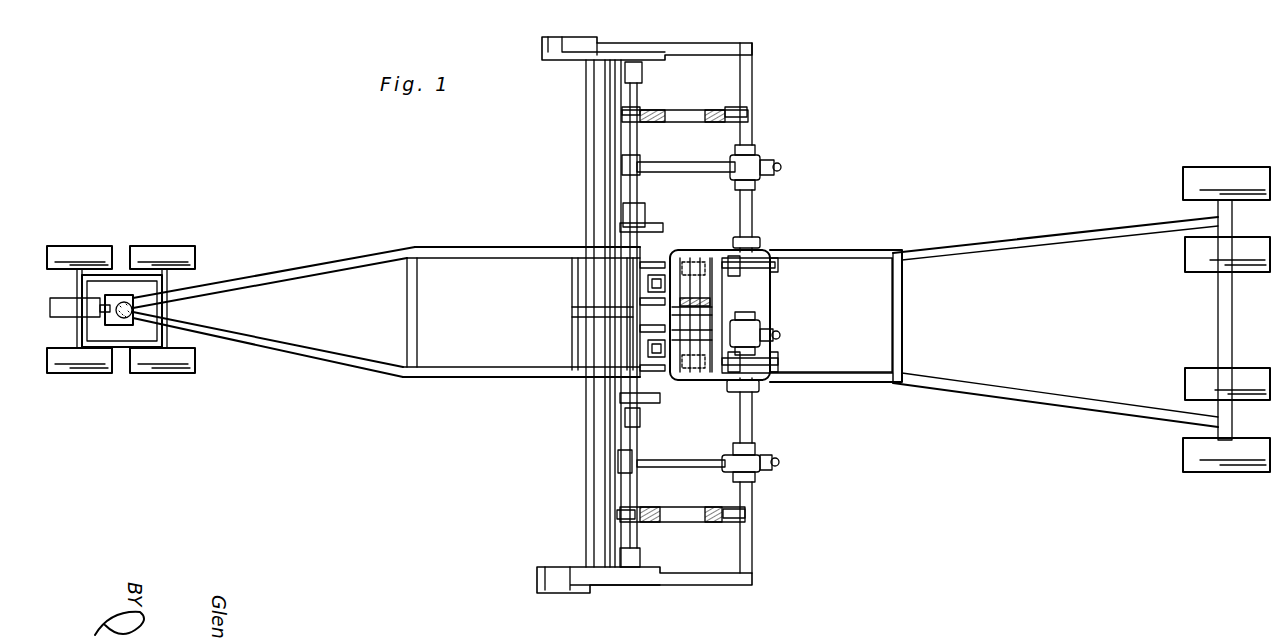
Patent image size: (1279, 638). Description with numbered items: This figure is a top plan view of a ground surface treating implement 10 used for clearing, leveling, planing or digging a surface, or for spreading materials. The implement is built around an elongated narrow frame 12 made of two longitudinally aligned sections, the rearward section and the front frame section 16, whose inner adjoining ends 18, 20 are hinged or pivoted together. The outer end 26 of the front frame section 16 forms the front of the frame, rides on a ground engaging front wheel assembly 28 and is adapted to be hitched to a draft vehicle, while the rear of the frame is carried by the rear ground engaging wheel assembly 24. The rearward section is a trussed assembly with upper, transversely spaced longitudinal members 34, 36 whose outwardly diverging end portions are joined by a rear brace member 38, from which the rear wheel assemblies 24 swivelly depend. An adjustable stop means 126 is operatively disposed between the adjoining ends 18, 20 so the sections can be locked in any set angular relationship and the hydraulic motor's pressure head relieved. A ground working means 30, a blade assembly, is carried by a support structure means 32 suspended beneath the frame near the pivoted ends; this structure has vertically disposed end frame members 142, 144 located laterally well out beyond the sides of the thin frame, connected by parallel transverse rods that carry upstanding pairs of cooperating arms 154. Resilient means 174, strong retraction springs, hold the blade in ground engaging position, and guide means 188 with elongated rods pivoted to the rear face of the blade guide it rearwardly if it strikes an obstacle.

The ground surface treating apparatus or implement 10 is at (813, 244).
The elongated narrow frame 12 is at (888, 252).
The frame section 16 is at (488, 250).
The inner adjoining end 18 is at (690, 326).
The inner adjoining end 20 is at (640, 283).
The ground engaging wheel assembly 24 is at (1181, 190).
The outer end 26 is at (197, 291).
The ground engaging front wheel assembly 28 is at (187, 243).
The ground working means 30 is at (574, 462).
The support structure means 32 is at (752, 500).
The upper longitudinally extending member 34 is at (866, 379).
The upper longitudinally extending member 36 is at (851, 256).
The rear brace member 38 is at (1225, 243).
The adjustable stop means 126 is at (790, 267).
The vertically disposed end frame member 142 is at (690, 578).
The vertically disposed end frame member 144 is at (722, 49).
The cooperating arms 154 is at (712, 198).
The resilient means 174 is at (672, 108).
The guide means 188 is at (762, 149).